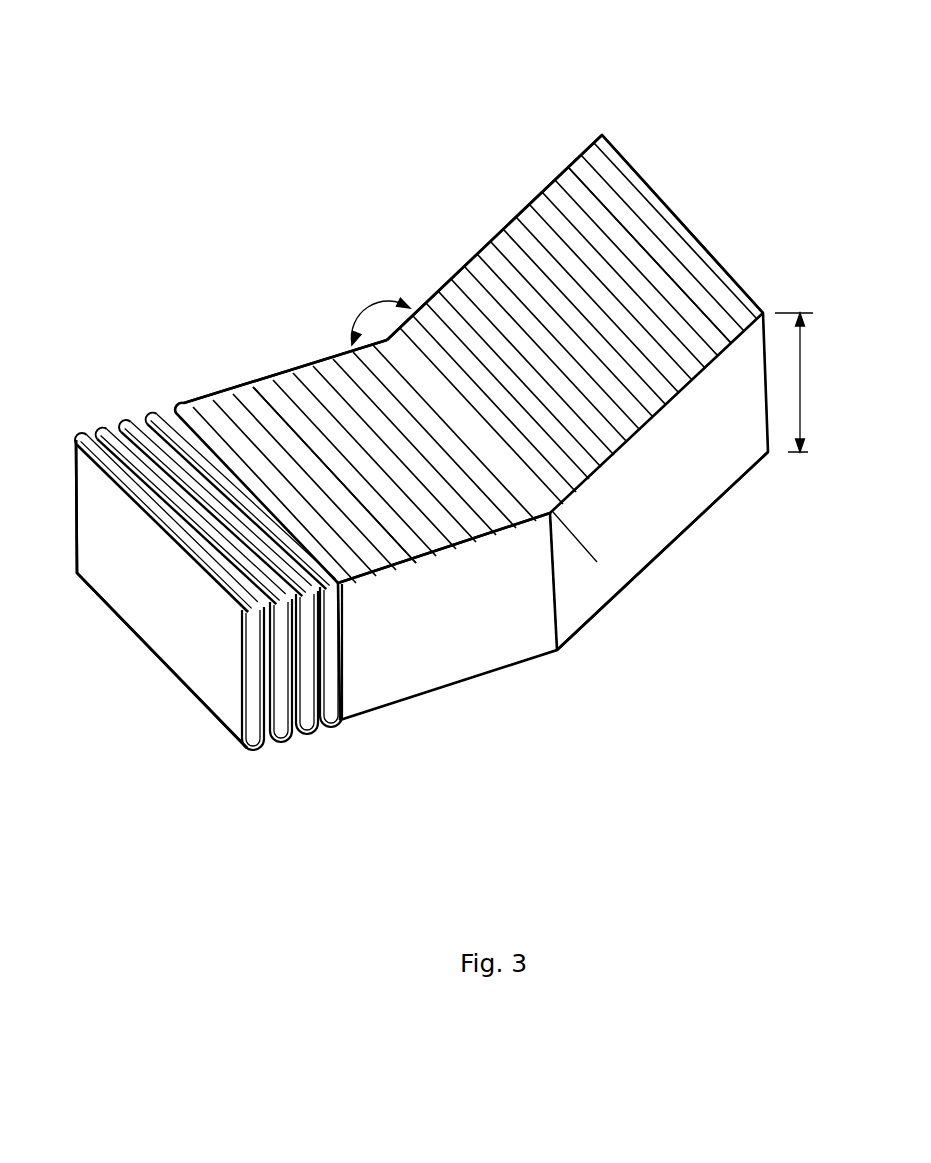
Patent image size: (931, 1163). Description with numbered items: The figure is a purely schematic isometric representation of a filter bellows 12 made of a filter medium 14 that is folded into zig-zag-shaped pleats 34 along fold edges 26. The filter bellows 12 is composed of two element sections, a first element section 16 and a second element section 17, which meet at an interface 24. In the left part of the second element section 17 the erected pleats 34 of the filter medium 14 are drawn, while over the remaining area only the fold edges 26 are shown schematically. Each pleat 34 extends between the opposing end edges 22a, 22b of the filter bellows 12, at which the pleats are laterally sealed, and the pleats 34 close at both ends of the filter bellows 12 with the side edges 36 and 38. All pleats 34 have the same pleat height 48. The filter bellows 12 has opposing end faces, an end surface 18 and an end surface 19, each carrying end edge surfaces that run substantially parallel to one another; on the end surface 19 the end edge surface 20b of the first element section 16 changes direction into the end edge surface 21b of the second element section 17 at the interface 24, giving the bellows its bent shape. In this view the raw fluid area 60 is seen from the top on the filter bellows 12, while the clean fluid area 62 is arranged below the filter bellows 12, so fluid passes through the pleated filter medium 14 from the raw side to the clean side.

The filter bellows 12 is at (296, 132).
The filter medium 14 is at (621, 194).
The first element section 16 is at (537, 230).
The second element section 17 is at (273, 394).
The end surface 18 is at (457, 253).
The end surface 19 is at (658, 545).
The end edge surface 20b is at (698, 495).
The end edge surface 21b is at (443, 663).
The end edge 22a is at (311, 363).
The end edge 22b is at (430, 555).
The interface 24 is at (577, 537).
The fold edges 26 is at (676, 232).
The pleats 34 is at (130, 432).
The side edge 36 is at (105, 485).
The side edge 38 is at (726, 265).
The pleat height 48 is at (801, 382).
The raw fluid area 60 is at (190, 365).
The clean fluid area 62 is at (402, 766).